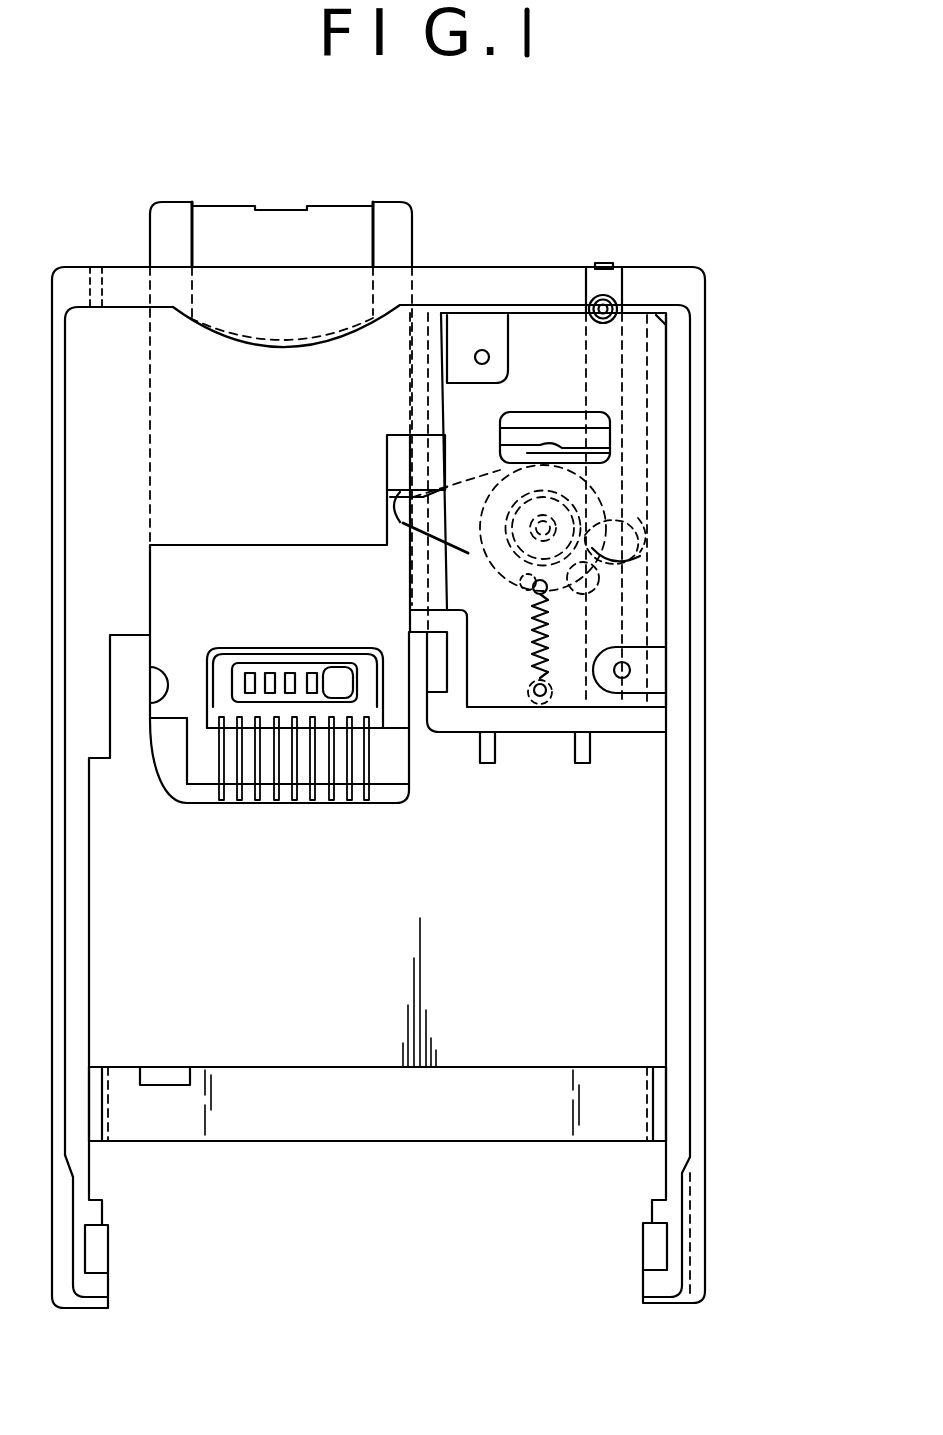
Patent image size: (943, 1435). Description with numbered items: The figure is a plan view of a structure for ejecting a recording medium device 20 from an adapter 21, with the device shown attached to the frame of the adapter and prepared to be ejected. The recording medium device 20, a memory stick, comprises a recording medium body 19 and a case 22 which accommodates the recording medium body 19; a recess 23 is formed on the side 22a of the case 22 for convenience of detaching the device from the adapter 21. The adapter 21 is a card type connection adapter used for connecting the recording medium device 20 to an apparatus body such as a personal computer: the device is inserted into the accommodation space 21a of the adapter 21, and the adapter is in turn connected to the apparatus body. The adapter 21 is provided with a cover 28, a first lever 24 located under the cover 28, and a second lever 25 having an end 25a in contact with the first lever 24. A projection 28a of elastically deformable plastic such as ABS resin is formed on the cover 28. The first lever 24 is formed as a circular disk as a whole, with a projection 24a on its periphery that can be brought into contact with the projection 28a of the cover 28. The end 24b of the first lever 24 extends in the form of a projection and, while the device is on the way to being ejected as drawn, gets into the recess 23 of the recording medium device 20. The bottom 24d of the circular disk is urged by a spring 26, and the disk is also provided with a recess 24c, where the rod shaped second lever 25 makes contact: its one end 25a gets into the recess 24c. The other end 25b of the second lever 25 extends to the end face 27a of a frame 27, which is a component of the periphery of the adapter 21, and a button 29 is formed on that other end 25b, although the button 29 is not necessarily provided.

The recording medium body 19 is at (242, 277).
The recording medium device 20 is at (332, 240).
The adapter 21 is at (605, 945).
The accommodation space 21a is at (173, 353).
The case 22 is at (393, 773).
The side of the case 22a is at (413, 457).
The recess 23 is at (390, 518).
The first lever 24 is at (570, 580).
The projection 24a is at (605, 458).
The end of the first lever 24b is at (387, 490).
The recess 24c is at (640, 558).
The bottom of the circular disk 24d is at (520, 590).
The second lever 25 is at (603, 383).
The end of the second lever 25a is at (642, 530).
The other end of the second lever 25b is at (607, 380).
The spring 26 is at (555, 665).
The frame 27 is at (263, 1090).
The end face of the frame 27a is at (545, 263).
The cover 28 is at (633, 628).
The projection 28a is at (610, 443).
The button 29 is at (605, 295).